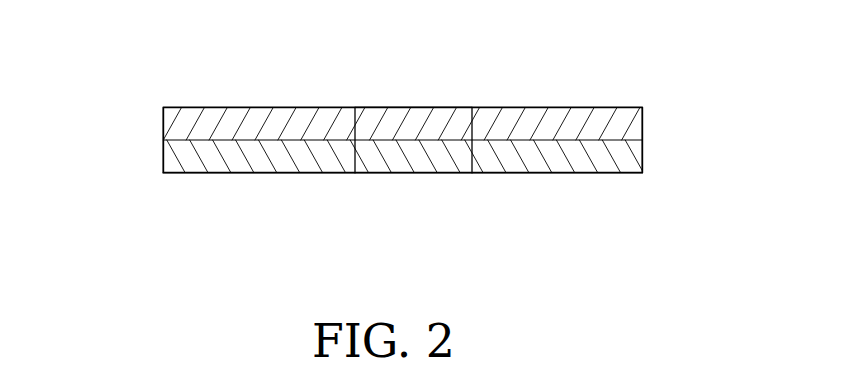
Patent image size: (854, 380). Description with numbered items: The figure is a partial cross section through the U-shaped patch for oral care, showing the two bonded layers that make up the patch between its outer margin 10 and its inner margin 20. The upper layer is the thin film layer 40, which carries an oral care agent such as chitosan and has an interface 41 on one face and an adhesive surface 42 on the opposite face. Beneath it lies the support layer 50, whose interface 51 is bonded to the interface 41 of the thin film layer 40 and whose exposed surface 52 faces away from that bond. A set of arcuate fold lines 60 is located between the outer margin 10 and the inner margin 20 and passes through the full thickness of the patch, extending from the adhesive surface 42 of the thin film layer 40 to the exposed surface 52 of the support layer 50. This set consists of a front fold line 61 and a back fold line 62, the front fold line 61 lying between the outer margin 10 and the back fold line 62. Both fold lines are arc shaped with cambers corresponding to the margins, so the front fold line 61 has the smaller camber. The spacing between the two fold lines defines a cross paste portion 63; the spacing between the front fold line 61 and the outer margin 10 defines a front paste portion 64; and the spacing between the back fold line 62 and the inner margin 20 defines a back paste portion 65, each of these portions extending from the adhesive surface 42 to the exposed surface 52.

The outer margin 10 is at (160, 132).
The inner margin 20 is at (643, 127).
The thin film layer 40 is at (158, 121).
The interface 41 is at (264, 148).
The adhesive surface 42 is at (596, 101).
The support layer 50 is at (157, 176).
The interface 51 is at (428, 142).
The exposed surface 52 is at (613, 177).
The set of arcuate fold lines 60 is at (413, 55).
The front fold line 61 is at (355, 107).
The back fold line 62 is at (472, 107).
The cross paste portion 63 is at (413, 230).
The front paste portion 64 is at (259, 228).
The back paste portion 65 is at (557, 230).